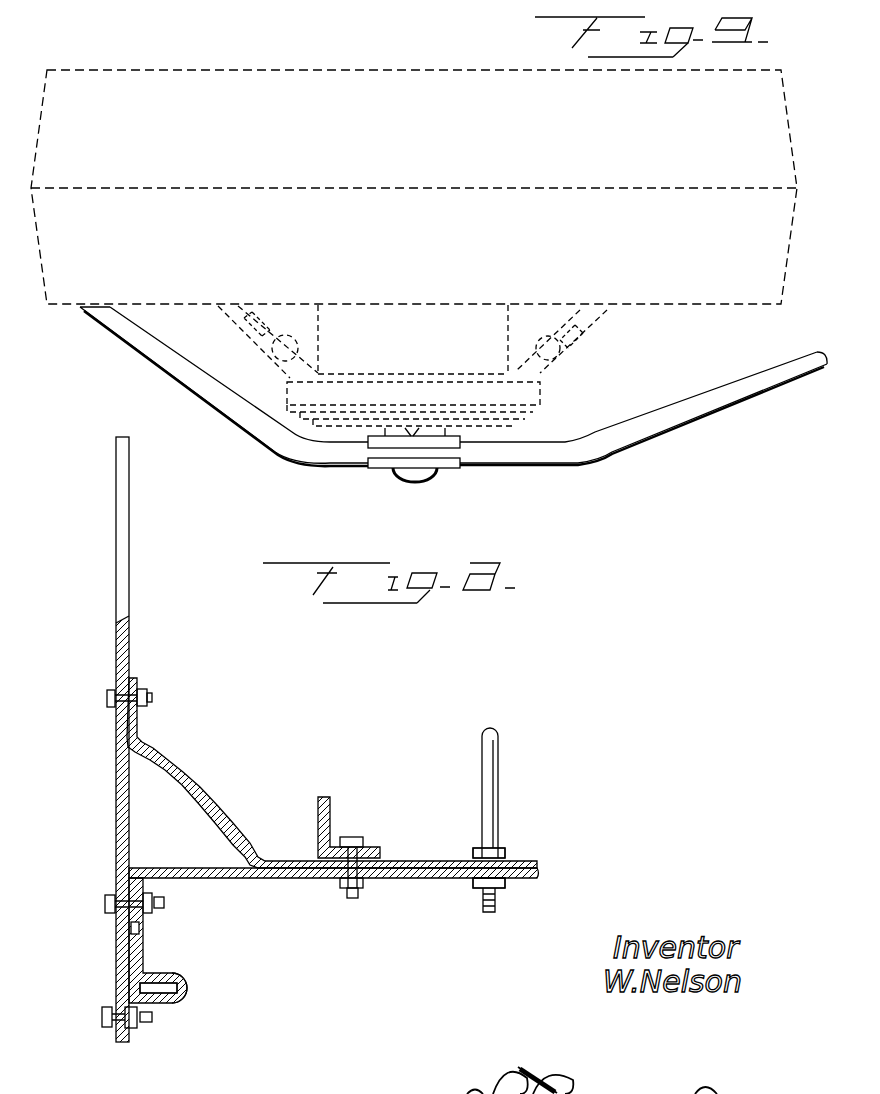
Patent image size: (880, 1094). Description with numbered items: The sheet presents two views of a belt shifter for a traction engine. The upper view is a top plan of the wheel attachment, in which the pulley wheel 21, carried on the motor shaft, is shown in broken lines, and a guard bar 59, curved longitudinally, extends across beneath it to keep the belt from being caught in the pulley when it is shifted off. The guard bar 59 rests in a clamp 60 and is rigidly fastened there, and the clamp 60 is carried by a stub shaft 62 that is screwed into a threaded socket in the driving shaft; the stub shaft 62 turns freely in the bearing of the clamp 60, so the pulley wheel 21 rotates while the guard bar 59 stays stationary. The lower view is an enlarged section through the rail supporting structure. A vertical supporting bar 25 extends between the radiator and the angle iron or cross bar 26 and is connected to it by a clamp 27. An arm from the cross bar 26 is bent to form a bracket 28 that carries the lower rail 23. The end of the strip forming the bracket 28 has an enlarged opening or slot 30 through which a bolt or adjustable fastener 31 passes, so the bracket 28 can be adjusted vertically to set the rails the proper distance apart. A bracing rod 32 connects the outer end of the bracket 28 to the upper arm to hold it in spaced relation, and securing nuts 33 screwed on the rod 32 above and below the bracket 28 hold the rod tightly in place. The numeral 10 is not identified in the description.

In FIG. 9, the hidden mechanism 10 is at (412, 414).
In FIG. 9, the pulley wheel 21 is at (337, 68).
In FIG. 9, the guard bar 59 is at (662, 422).
In FIG. 9, the clamp 60 is at (462, 442).
In FIG. 9, the stub shaft 62 is at (440, 476).
In FIG. 6, the lower rail 23 is at (325, 797).
In FIG. 6, the vertical supporting bar 25 is at (130, 613).
In FIG. 6, the angle iron or cross bar 26 is at (160, 990).
In FIG. 6, the clamp 27 is at (185, 982).
In FIG. 6, the bracket 28 is at (405, 878).
In FIG. 6, the enlarged opening or slot 30 is at (138, 708).
In FIG. 6, the bolt or adjustable fastener 31 is at (104, 708).
In FIG. 6, the bracing rod 32 is at (498, 747).
In FIG. 6, the securing nut 33 is at (505, 852).